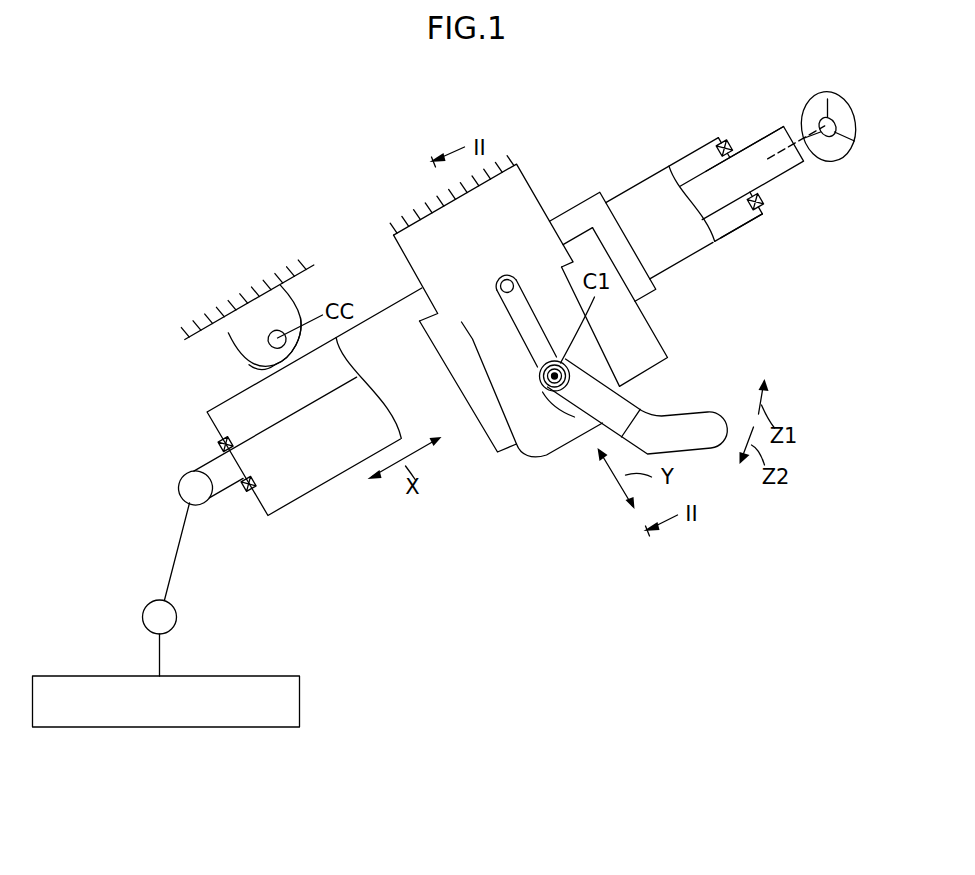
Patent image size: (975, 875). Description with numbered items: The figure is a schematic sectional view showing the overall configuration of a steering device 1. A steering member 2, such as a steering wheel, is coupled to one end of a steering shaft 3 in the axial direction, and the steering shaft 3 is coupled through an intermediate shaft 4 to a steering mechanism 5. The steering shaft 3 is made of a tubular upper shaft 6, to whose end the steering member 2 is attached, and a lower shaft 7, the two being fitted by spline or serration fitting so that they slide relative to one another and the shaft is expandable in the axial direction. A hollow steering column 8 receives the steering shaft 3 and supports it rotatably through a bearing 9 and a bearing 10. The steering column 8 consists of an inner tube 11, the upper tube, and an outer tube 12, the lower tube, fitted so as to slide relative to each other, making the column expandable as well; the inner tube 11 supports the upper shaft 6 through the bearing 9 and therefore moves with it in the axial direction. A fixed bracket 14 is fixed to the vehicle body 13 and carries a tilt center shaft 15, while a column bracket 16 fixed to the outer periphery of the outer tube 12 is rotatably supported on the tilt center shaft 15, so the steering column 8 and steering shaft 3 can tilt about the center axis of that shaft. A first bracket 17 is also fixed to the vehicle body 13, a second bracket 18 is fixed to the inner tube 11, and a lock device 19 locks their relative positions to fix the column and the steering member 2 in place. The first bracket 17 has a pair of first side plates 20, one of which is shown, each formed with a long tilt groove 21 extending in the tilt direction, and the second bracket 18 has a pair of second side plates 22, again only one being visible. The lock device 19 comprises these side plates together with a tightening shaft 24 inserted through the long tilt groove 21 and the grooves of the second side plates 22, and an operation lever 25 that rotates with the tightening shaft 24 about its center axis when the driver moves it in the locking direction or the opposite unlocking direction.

The steering device 1 is at (273, 208).
The steering member 2 is at (818, 99).
The steering shaft 3 is at (751, 141).
The intermediate shaft 4 is at (186, 561).
The steering mechanism 5 is at (300, 704).
The upper shaft 6 is at (792, 172).
The lower shaft 7 is at (315, 425).
The steering column 8 is at (733, 238).
The bearing 9 is at (766, 206).
The bearing 10 is at (246, 491).
The inner tube 11 is at (628, 195).
The outer tube 12 is at (296, 505).
The vehicle body 13 is at (197, 323).
The fixed bracket 14 is at (234, 337).
The tilt center shaft 15 is at (270, 330).
The column bracket 16 is at (264, 368).
The first bracket 17 is at (406, 264).
The second bracket 18 is at (659, 336).
The lock device 19 is at (570, 425).
The first side plate 20 is at (532, 192).
The long tilt groove 21 is at (508, 280).
The second side plate 22 is at (490, 445).
The tightening shaft 24 is at (552, 396).
The operation lever 25 is at (687, 425).